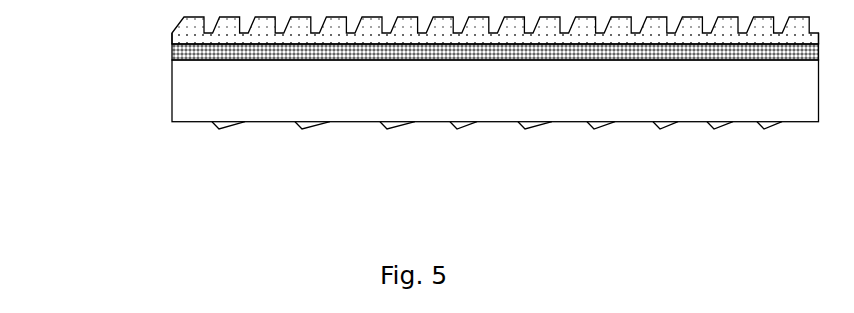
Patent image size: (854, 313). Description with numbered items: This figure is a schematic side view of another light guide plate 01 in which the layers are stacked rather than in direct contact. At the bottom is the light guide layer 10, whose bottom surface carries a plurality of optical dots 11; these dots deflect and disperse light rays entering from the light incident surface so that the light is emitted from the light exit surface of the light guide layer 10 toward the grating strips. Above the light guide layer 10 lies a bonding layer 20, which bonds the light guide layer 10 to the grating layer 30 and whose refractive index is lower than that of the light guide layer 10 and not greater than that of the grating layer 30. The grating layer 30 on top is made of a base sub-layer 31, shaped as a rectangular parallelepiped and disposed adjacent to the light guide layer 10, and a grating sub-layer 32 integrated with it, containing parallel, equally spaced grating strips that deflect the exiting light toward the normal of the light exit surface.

The light guide plate 01 is at (63, 20).
The light guide layer 10 is at (172, 110).
The optical dots 11 is at (221, 125).
The bonding layer 20 is at (172, 52).
The grating layer 30 is at (103, 10).
The base sub-layer 31 is at (172, 39).
The grating sub-layer 32 is at (178, 18).